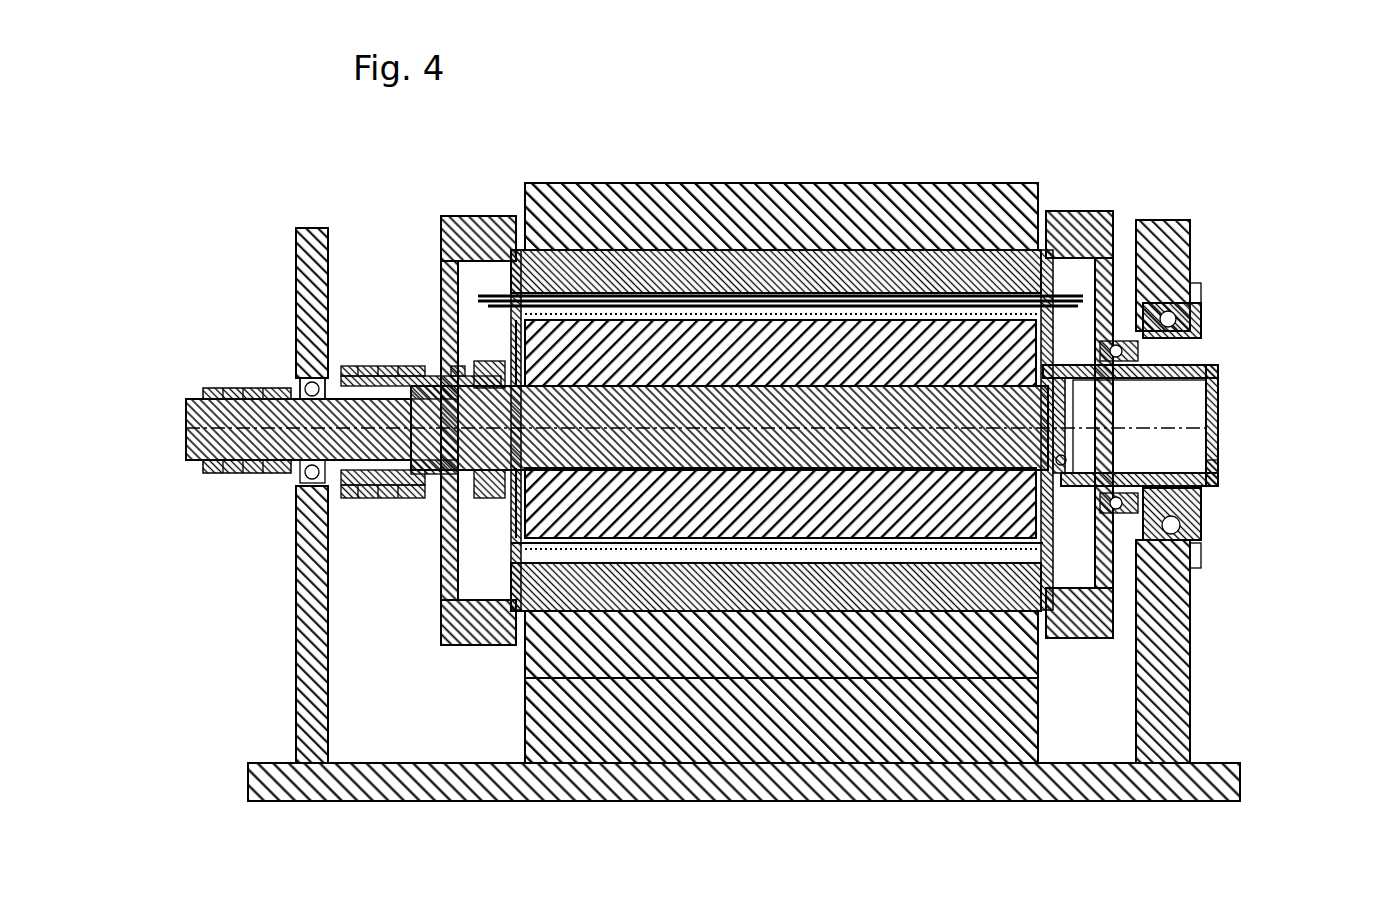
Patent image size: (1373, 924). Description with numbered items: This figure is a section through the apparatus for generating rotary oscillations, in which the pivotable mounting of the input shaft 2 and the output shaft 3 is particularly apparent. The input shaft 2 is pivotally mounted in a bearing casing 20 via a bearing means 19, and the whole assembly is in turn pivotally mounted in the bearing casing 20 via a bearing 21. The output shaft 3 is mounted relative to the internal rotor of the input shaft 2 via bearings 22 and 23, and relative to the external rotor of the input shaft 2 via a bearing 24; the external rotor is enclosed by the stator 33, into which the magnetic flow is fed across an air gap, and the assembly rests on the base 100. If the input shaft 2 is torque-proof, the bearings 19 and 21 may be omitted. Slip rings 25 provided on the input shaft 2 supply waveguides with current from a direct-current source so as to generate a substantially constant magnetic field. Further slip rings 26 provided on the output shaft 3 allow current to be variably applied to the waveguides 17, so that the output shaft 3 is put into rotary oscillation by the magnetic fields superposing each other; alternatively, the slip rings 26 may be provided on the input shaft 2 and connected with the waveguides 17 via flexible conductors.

The base plate 100 is at (965, 770).
The stator 33 is at (620, 195).
The waveguides 17 is at (875, 300).
The input shaft 2 is at (387, 410).
The slip rings 25 is at (232, 468).
The slip rings 26 is at (350, 488).
The bearing casing 20 is at (303, 228).
The bearing means 19 is at (290, 360).
The bearing 22 is at (500, 363).
The bearing 21 is at (1163, 517).
The output shaft 3 is at (1210, 357).
The bearing 23 is at (1053, 452).
The bearing 24 is at (1210, 462).